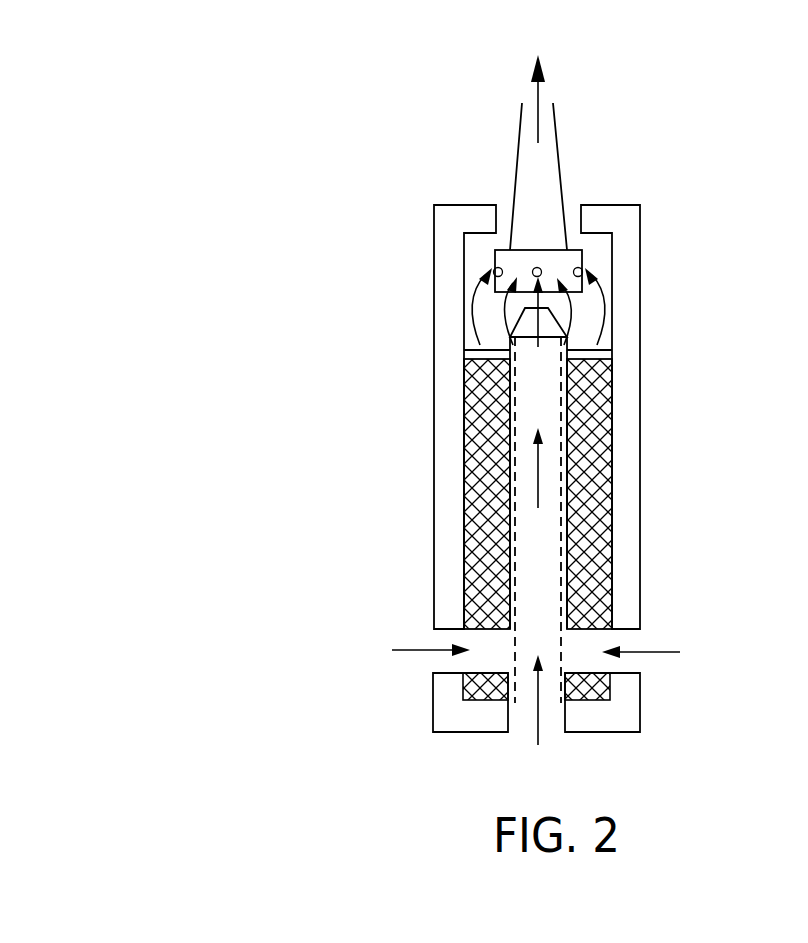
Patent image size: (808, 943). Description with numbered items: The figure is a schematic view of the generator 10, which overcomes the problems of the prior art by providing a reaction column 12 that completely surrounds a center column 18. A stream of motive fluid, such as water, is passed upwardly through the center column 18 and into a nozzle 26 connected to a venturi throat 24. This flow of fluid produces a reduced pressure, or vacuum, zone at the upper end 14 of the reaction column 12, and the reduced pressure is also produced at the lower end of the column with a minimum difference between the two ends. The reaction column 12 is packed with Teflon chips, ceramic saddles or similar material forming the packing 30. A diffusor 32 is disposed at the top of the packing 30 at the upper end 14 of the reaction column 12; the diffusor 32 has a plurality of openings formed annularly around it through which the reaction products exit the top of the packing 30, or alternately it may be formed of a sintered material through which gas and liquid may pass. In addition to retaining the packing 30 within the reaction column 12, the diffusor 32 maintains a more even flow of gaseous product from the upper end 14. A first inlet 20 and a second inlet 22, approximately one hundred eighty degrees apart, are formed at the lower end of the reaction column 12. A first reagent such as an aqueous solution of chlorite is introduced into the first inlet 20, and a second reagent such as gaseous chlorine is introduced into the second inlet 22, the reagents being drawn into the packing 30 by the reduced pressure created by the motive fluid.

The generator 10 is at (375, 420).
The reaction column 12 is at (612, 422).
The upper end 14 is at (464, 383).
The center column 18 is at (557, 535).
The first inlet 20 is at (433, 640).
The second inlet 22 is at (638, 642).
The venturi throat 24 is at (563, 182).
The nozzle 26 is at (551, 312).
The packing 30 is at (477, 482).
The diffusor 32 is at (612, 355).